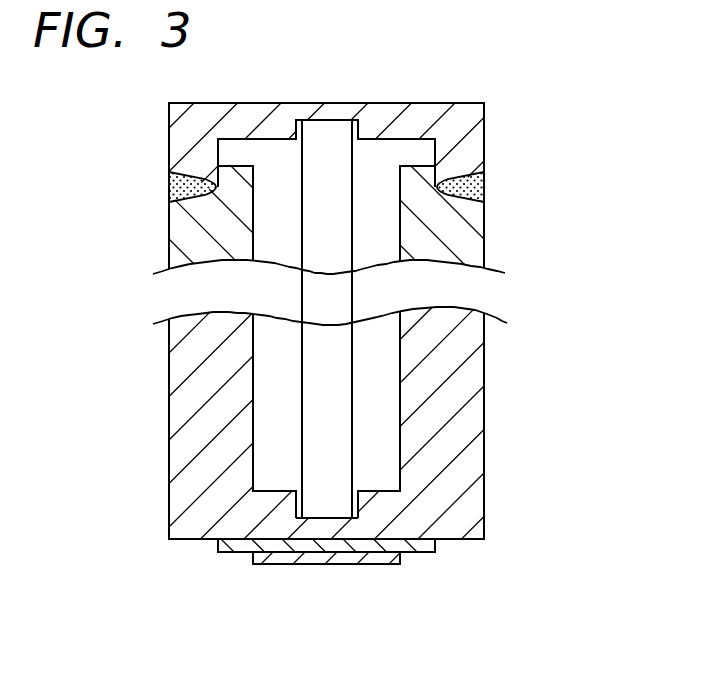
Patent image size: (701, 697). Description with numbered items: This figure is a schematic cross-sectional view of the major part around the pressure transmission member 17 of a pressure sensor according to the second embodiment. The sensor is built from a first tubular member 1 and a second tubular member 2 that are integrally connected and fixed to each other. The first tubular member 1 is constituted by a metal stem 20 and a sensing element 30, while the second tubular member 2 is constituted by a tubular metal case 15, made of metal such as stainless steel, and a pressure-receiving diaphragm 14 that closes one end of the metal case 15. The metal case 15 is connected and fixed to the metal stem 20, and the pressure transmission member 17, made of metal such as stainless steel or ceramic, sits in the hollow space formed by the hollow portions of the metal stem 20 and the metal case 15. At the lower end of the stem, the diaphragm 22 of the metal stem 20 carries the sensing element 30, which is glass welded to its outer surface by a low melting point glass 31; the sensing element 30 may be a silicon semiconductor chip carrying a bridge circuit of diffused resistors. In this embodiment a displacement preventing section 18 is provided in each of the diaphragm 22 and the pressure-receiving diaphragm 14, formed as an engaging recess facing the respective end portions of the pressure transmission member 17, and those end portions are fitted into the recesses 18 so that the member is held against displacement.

The first tubular member 1 is at (385, 474).
The second tubular member 2 is at (381, 188).
The pressure-receiving diaphragm 14 is at (468, 155).
The metal case 15 is at (468, 244).
The pressure transmission member 17 is at (330, 370).
The displacement preventing section 18 is at (342, 121).
The metal stem 20 is at (450, 494).
The diaphragm 22 is at (314, 530).
The sensing element 30 is at (390, 560).
The low melting point glass 31 is at (218, 546).